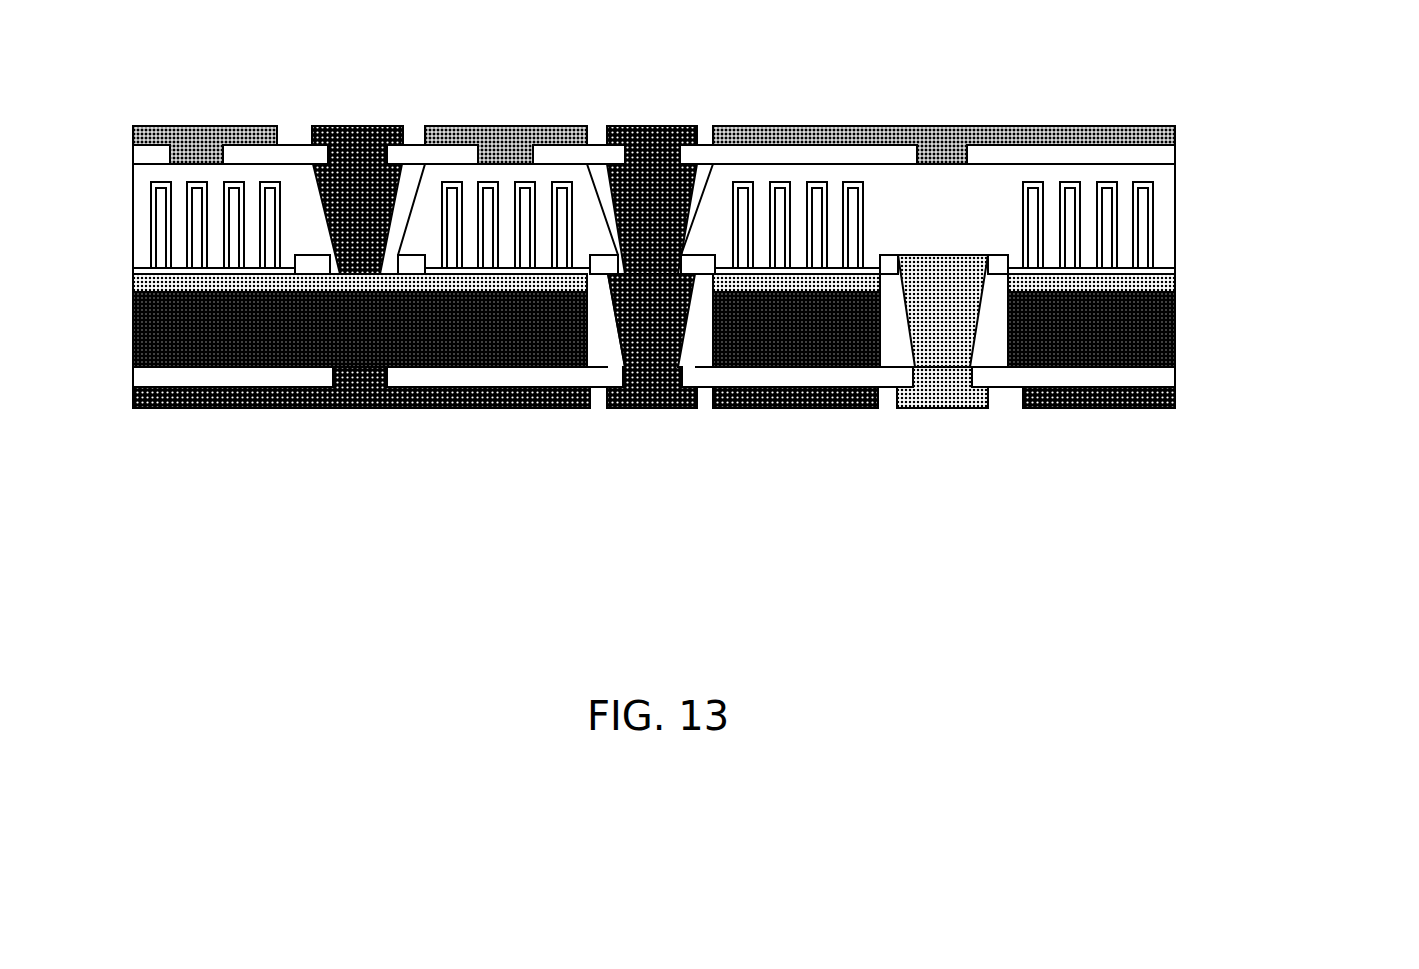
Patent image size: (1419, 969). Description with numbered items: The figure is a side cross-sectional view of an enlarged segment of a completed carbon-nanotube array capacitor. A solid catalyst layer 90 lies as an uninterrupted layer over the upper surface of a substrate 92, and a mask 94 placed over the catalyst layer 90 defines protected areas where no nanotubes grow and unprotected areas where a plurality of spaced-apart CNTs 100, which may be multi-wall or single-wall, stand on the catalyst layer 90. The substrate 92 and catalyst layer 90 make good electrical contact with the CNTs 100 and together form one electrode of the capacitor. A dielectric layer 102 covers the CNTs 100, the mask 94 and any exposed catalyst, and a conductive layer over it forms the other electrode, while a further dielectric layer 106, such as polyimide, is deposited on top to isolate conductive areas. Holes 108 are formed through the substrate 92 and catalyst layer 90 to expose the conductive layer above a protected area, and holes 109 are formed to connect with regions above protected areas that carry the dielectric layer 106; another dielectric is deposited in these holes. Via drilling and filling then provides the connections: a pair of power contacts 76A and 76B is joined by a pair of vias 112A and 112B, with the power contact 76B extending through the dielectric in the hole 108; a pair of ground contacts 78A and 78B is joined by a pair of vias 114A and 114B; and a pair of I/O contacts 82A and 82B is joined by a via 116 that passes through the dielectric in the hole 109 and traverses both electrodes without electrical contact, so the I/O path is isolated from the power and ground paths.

The power contact 76A is at (944, 102).
The power contact 76B is at (1020, 425).
The ground contact 78A is at (352, 152).
The ground contact 78B is at (361, 453).
The I/O contact 82A is at (635, 153).
The I/O contact 82B is at (690, 391).
The catalyst layer 90 is at (1175, 292).
The substrate 92 is at (1175, 340).
The mask 94 is at (990, 255).
The CNTs 100 is at (1150, 243).
The dielectric layer 102 is at (136, 265).
The dielectric layer 106 is at (705, 102).
The hole 108 is at (1175, 383).
The hole 109 is at (590, 347).
The via 112A is at (915, 155).
The via 112B is at (975, 343).
The via 114A is at (312, 182).
The via 114B is at (330, 373).
The via 116 is at (607, 190).